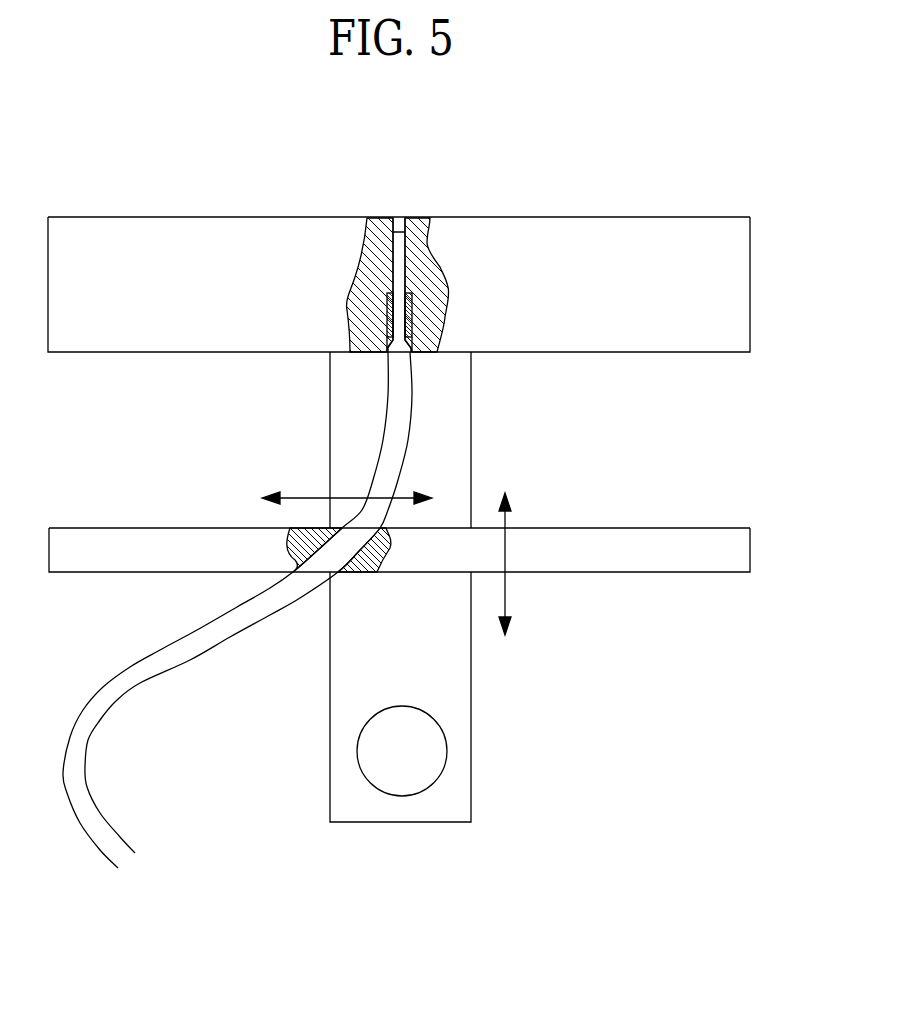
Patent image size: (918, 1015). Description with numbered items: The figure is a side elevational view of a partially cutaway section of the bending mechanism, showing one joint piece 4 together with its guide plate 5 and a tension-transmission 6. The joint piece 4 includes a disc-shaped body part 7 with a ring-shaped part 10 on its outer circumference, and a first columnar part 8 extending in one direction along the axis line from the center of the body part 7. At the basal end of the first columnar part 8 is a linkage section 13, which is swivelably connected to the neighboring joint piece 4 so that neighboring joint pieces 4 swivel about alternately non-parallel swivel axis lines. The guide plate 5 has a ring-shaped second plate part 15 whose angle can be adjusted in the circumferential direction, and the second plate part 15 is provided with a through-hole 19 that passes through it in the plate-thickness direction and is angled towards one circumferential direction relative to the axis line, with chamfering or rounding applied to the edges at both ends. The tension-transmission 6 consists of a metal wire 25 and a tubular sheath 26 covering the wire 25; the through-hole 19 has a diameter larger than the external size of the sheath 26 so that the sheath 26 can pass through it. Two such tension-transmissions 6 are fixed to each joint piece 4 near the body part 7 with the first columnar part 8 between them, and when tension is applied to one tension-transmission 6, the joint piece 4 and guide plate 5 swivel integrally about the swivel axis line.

The joint piece 4 is at (396, 235).
The body part 7 is at (140, 216).
The ring-shaped part 10 is at (225, 240).
The wire 25 is at (408, 260).
The sheath 26 is at (413, 310).
The first columnar part 8 is at (472, 412).
The linkage section 13 is at (495, 763).
The guide plate 5 is at (397, 550).
The second plate part 15 is at (153, 545).
The through-hole 19 is at (317, 553).
The tension-transmission 6 is at (153, 705).